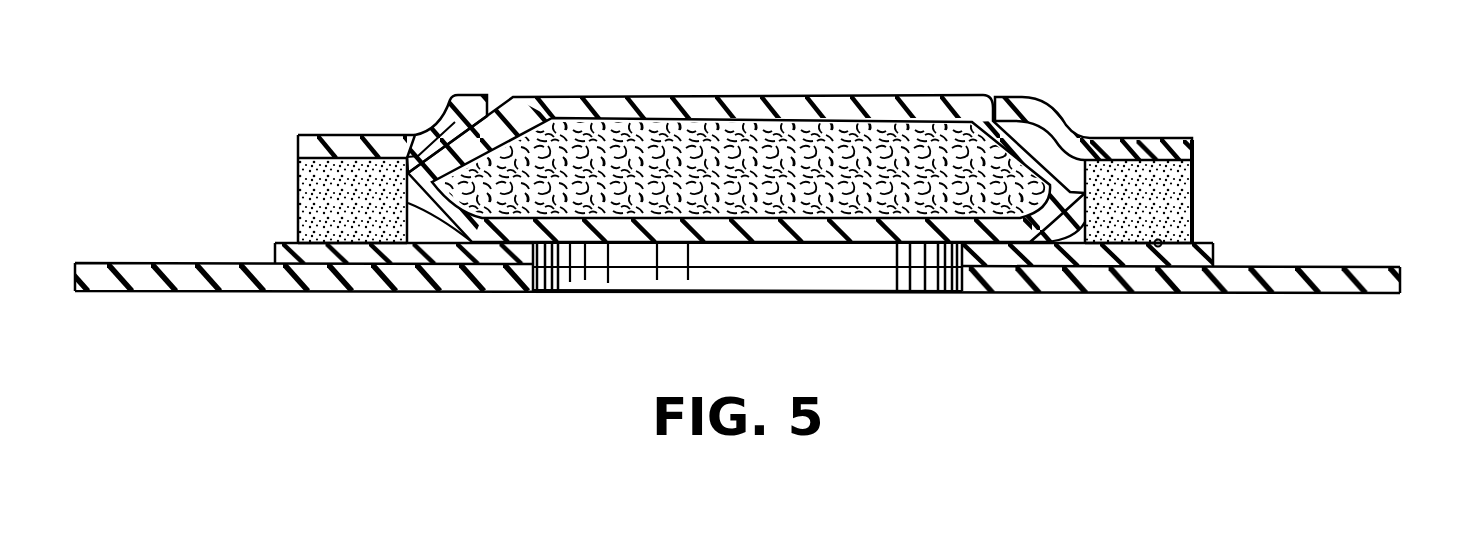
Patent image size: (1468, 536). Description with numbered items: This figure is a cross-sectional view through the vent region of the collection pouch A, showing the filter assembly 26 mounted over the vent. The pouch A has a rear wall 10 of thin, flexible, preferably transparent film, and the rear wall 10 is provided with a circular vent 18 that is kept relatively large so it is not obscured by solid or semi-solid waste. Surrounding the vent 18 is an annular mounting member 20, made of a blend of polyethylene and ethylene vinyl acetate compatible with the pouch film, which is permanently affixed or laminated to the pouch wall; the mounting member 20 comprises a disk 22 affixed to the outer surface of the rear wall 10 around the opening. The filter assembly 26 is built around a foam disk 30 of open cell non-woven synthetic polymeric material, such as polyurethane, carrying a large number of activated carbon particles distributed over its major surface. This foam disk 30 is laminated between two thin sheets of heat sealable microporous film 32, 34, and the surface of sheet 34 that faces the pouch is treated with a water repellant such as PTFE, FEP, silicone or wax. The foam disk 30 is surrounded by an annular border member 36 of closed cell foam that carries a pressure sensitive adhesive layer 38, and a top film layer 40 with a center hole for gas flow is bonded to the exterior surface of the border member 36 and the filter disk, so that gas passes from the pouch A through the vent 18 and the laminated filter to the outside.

The rear wall 10 is at (1287, 265).
The vent 18 is at (549, 283).
The mounting member 20 is at (282, 224).
The disk 22 is at (1203, 246).
The filter assembly 26 is at (1166, 122).
The foam disk 30 is at (912, 135).
The microporous film sheet 32 is at (588, 100).
The microporous film sheet 34 is at (627, 228).
The annular border member 36 is at (1178, 186).
The pressure sensitive adhesive layer 38 is at (1160, 248).
The top film layer 40 is at (438, 115).
The pouch A is at (1375, 254).